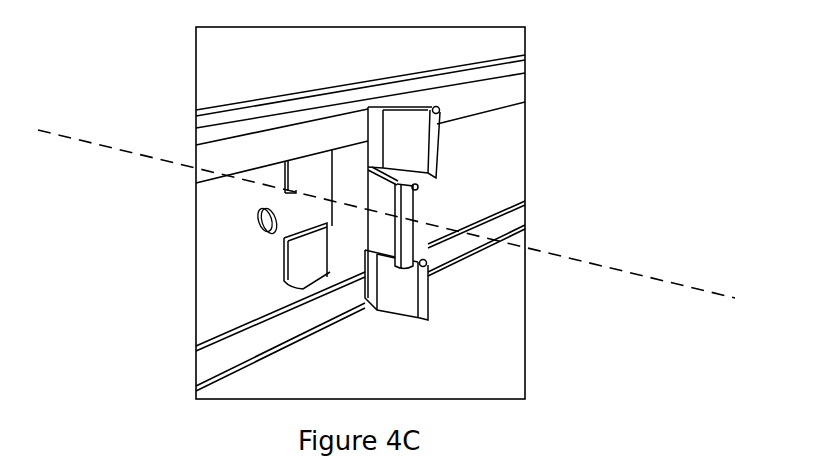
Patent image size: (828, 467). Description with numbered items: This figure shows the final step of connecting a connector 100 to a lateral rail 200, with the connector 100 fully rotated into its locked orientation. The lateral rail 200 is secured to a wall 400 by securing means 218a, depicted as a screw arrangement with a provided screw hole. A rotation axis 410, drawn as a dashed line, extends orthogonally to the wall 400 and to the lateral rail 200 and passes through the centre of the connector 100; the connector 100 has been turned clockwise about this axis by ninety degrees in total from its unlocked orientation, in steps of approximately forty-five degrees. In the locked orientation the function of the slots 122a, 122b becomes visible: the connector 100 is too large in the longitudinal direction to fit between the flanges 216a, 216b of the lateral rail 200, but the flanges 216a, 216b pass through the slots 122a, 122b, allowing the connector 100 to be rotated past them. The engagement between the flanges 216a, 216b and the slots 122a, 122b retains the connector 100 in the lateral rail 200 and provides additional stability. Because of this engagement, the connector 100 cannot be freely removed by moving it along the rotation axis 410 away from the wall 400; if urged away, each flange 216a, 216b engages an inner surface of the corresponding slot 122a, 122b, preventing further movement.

The connector 100 is at (304, 170).
The lateral rail 200 is at (240, 283).
The flange 216a is at (508, 88).
The flange 216b is at (222, 352).
The securing means 218a is at (262, 222).
The slot 122a is at (365, 291).
The slot 122b is at (383, 128).
The wall 400 is at (487, 357).
The rotation axis 410 is at (633, 274).